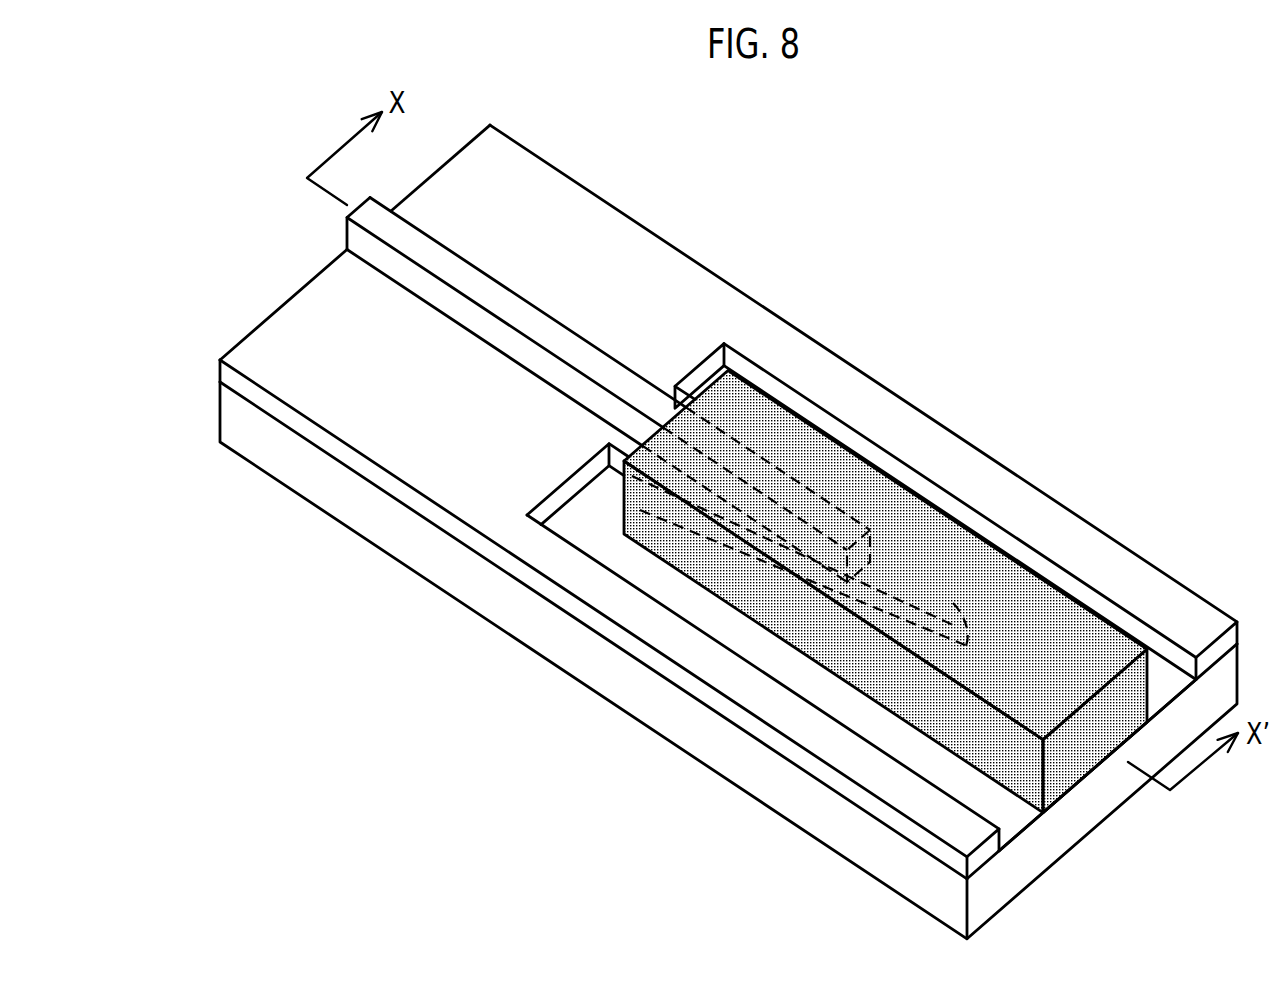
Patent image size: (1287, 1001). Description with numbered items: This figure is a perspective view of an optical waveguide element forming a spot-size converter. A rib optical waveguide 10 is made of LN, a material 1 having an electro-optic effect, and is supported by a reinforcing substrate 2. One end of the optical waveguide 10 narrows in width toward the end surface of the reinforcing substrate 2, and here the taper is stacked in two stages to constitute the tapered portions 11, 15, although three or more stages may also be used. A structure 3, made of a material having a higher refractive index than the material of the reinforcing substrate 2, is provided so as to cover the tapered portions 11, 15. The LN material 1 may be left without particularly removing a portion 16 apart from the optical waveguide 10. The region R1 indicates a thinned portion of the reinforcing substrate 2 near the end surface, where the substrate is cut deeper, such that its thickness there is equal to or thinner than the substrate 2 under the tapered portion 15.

The material having an electro-optic effect 1 is at (647, 277).
The reinforcing substrate 2 is at (1060, 830).
The structure 3 is at (1073, 633).
The rib optical waveguide 10 is at (468, 273).
The tapered portion 11 is at (873, 540).
The tapered portion 15 is at (933, 628).
The portion apart from the optical waveguide 16 is at (1050, 522).
The thinned portion of the reinforcing substrate R1 is at (595, 523).